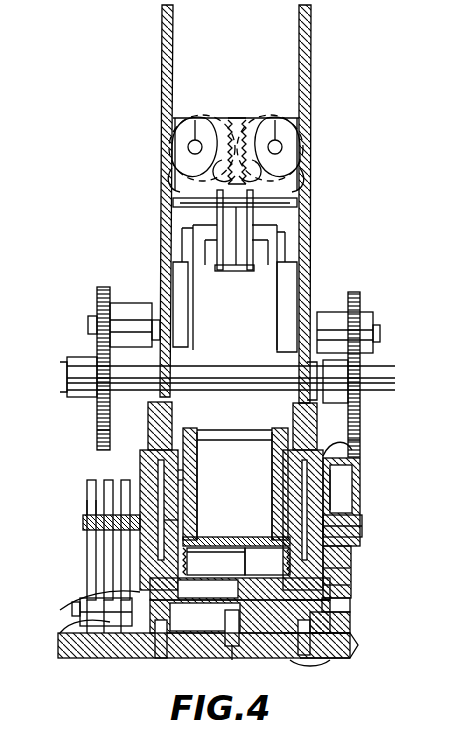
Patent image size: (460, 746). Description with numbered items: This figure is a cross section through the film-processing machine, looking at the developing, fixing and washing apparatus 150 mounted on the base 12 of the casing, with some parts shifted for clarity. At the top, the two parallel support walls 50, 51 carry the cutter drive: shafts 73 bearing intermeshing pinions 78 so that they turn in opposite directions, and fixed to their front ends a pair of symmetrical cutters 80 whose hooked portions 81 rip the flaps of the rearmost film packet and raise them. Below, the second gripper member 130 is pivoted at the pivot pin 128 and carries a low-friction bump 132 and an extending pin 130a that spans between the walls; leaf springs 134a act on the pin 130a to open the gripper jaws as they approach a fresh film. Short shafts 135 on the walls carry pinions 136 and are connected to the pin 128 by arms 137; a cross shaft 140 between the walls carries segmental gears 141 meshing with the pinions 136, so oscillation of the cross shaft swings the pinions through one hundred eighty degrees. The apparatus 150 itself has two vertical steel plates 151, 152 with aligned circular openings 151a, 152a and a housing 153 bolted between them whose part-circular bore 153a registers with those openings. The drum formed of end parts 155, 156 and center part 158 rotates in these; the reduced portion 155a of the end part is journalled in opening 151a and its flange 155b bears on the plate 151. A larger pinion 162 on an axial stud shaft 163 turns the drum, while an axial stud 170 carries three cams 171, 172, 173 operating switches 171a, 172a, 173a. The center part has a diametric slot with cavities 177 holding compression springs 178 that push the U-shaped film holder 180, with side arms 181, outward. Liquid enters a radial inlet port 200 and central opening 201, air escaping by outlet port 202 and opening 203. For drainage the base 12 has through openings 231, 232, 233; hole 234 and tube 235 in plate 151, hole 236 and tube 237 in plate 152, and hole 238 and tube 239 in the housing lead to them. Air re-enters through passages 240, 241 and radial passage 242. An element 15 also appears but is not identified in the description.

The base 12 is at (82, 660).
The frame 15 is at (24, 570).
The support wall 50 is at (311, 50).
The support wall 51 is at (162, 62).
The shaft 73 is at (199, 116).
The pinion 78 is at (250, 116).
The cutter 80 is at (184, 130).
The hooked portion 81 is at (239, 168).
The pivot pin 128 is at (210, 268).
The second gripper member 130 is at (258, 272).
The extending pin 130a is at (170, 185).
The bump 132 is at (242, 272).
The leaf spring 134a is at (172, 204).
The short shaft 135 is at (90, 322).
The pinion 136 is at (100, 288).
The arm 137 is at (180, 276).
The cross shaft 140 is at (230, 374).
The segmental gear 141 is at (98, 436).
The developing, fixing and washing apparatus 150 is at (322, 624).
The plate 151 is at (148, 406).
The circular opening 151a is at (197, 466).
The plate 152 is at (293, 410).
The circular opening 152a is at (272, 478).
The housing 153 is at (296, 662).
The inner bore 153a is at (290, 660).
The end part 155 is at (128, 660).
The reduced annular portion 155a is at (240, 600).
The annular flange 155b is at (98, 420).
The end part 156 is at (348, 556).
The center part 158 is at (268, 660).
The larger pinion 162 is at (342, 470).
The axial stud shaft 163 is at (350, 524).
The axial stud 170 is at (83, 523).
The cam 171 is at (88, 587).
The switch 171a is at (64, 638).
The cam 172 is at (104, 500).
The switch 172a is at (100, 650).
The cam 173 is at (88, 486).
The switch 173a is at (110, 660).
The cavity 177 is at (218, 561).
The coil compression spring 178 is at (195, 540).
The film holder 180 is at (191, 430).
The side arm 181 is at (200, 432).
The radial inlet port 200 is at (197, 478).
The central opening 201 is at (197, 490).
The radial air outlet port 202 is at (355, 448).
The central opening 203 is at (340, 486).
The through opening 231 is at (158, 660).
The through opening 232 is at (258, 660).
The through opening 233 is at (316, 660).
The vertical through hole 234 is at (72, 608).
The tube 235 is at (163, 660).
The vertical through hole 236 is at (328, 612).
The tube 237 is at (318, 638).
The vertical hole 238 is at (267, 561).
The tube 239 is at (240, 625).
The horizontal passage 240 is at (258, 537).
The horizontal passage 241 is at (330, 582).
The radial passage 242 is at (332, 592).